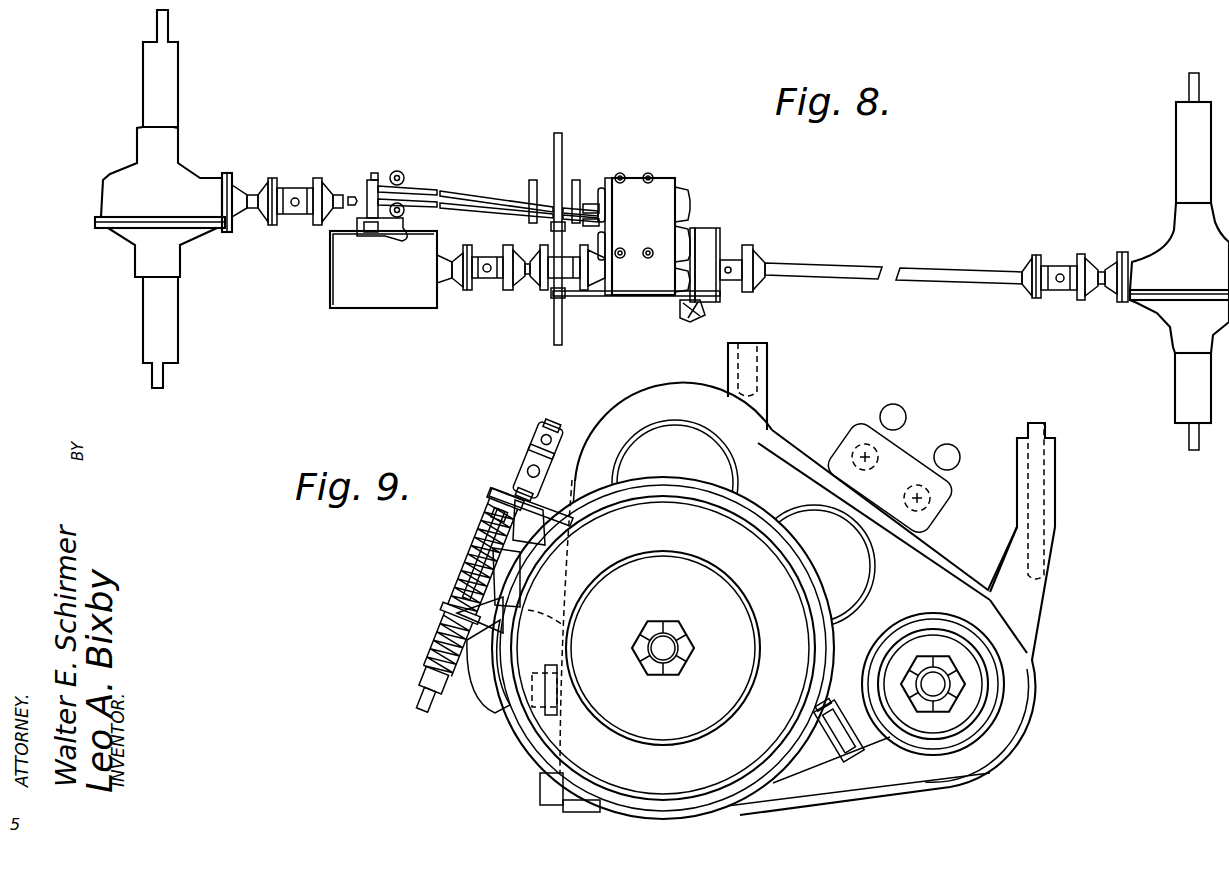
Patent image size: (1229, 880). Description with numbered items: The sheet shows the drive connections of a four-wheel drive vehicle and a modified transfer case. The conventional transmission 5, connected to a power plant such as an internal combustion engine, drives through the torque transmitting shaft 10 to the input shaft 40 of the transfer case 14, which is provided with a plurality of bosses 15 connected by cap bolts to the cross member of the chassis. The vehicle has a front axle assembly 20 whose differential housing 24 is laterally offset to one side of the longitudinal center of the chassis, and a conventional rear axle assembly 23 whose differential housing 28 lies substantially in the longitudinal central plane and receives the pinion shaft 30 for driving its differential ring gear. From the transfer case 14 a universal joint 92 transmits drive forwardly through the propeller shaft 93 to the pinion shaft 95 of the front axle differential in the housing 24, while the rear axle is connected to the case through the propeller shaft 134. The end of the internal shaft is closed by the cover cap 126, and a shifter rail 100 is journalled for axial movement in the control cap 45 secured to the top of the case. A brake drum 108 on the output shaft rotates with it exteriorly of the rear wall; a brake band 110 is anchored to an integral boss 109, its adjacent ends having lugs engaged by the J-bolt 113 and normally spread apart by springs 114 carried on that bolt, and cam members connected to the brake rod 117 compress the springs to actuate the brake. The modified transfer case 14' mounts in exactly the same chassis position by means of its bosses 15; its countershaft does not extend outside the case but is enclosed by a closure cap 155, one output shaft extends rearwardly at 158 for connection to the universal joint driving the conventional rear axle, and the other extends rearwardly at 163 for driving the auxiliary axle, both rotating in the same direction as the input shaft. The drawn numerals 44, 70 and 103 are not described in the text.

In FIG. 8, the transmission 5 is at (368, 296).
In FIG. 8, the torque transmitting shaft 10 is at (522, 278).
In FIG. 8, the transfer case 14 is at (654, 215).
In FIG. 9, the transfer case 14' is at (810, 593).
In FIG. 8, the bosses 15 is at (647, 173).
In FIG. 9, the bosses 15 is at (760, 366).
In FIG. 8, the front axle assembly 20 is at (176, 66).
In FIG. 8, the rear axle assembly 23 is at (1176, 153).
In FIG. 8, the differential housing 24 is at (178, 158).
In FIG. 8, the differential housing 28 is at (1160, 246).
In FIG. 8, the pinion shaft 30 is at (1102, 294).
In FIG. 8, the input shaft 40 is at (593, 281).
In FIG. 9, the pivot hole 44 is at (878, 456).
In FIG. 9, the control cap 45 is at (838, 418).
In FIG. 8, the bearing boss 70 is at (691, 236).
In FIG. 8, the universal joint 92 is at (565, 186).
In FIG. 8, the propeller shaft 93 is at (440, 192).
In FIG. 8, the pinion shaft 95 is at (247, 212).
In FIG. 9, the shifter rail 100 is at (930, 498).
In FIG. 8, the locking pawl 103 is at (684, 302).
In FIG. 9, the brake drum 108 is at (522, 716).
In FIG. 9, the boss 109 is at (835, 758).
In FIG. 8, the brake band 110 is at (721, 246).
In FIG. 9, the brake band 110 is at (524, 753).
In FIG. 9, the J-bolt 113 is at (414, 698).
In FIG. 9, the springs 114 is at (467, 570).
In FIG. 8, the brake rod 117 is at (608, 298).
In FIG. 9, the brake rod 117 is at (552, 427).
In FIG. 8, the cover cap 126 is at (691, 205).
In FIG. 8, the propeller shaft 134 is at (908, 262).
In FIG. 9, the closure cap 155 is at (855, 577).
In FIG. 9, the rearwardly extended shaft end 158 is at (680, 648).
In FIG. 9, the rearwardly extended shaft end 163 is at (930, 708).